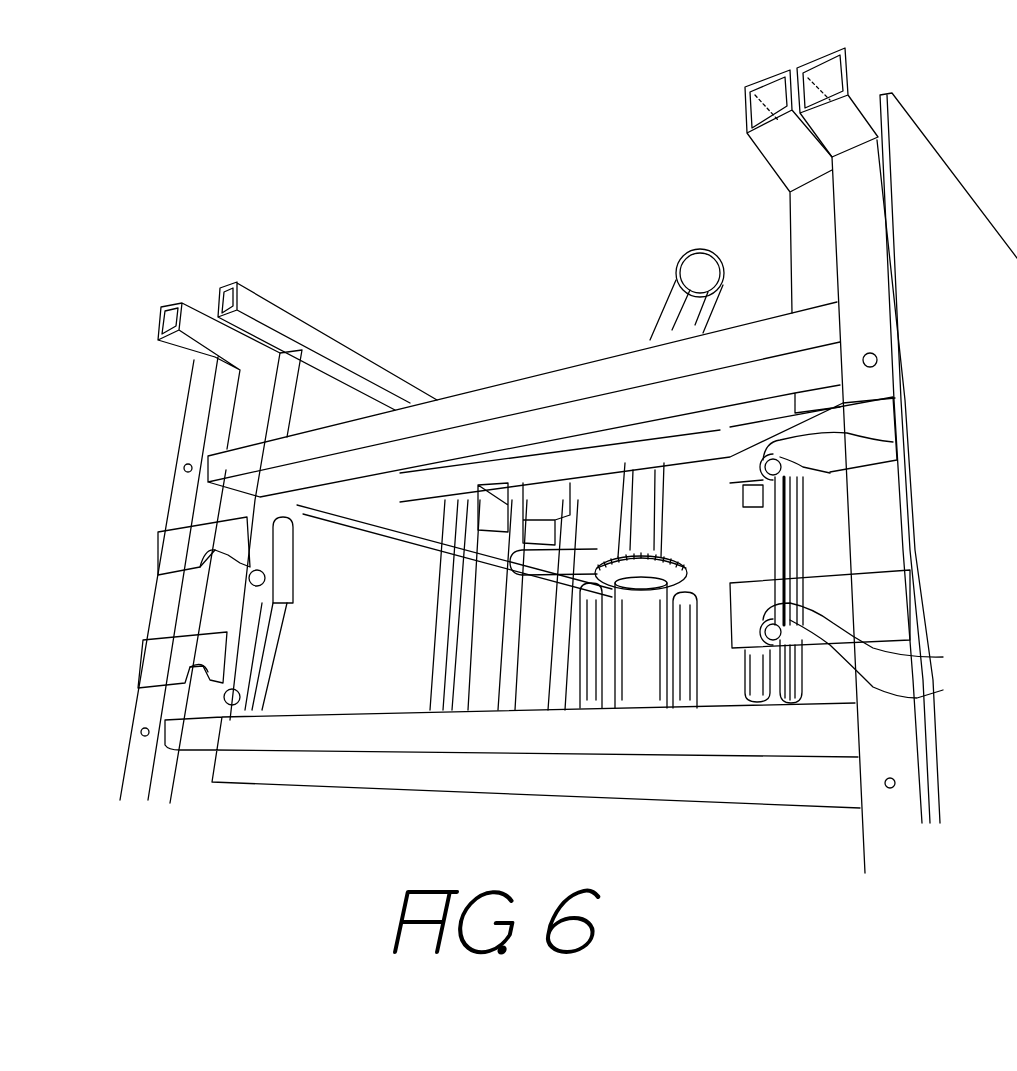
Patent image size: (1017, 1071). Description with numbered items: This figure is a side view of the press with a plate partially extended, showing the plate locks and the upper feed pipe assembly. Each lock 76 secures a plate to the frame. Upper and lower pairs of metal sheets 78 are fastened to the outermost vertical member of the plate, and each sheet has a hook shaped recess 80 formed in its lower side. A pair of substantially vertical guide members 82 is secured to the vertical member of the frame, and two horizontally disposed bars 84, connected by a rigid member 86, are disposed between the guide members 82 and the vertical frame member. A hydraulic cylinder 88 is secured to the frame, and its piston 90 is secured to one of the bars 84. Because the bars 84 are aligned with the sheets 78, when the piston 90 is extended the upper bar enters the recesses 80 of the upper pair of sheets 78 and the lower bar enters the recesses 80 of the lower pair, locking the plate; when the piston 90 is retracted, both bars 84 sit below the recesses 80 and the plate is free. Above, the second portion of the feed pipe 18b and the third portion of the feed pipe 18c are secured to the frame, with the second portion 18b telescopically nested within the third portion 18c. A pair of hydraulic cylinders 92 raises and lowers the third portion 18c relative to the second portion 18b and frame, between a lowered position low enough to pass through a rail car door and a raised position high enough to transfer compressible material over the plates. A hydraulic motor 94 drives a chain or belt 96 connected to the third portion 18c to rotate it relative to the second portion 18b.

The second portion of the feed pipe 18b is at (612, 705).
The third portion of the feed pipe 18c is at (670, 280).
The lock 76 is at (898, 424).
The metal sheets 78 is at (167, 555).
The hook shaped recess 80 is at (203, 550).
The vertical guide members 82 is at (290, 558).
The horizontally disposed bars 84 is at (280, 580).
The rigid member 86 is at (797, 540).
The hydraulic cylinder 88 is at (267, 660).
The piston 90 is at (763, 558).
The hydraulic cylinders 92 is at (587, 657).
The hydraulic motor 94 is at (683, 563).
The chain or belt 96 is at (560, 575).